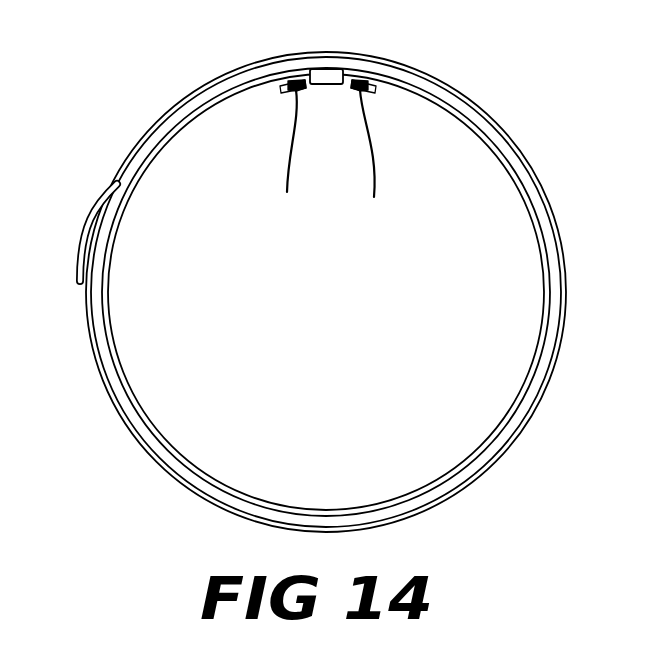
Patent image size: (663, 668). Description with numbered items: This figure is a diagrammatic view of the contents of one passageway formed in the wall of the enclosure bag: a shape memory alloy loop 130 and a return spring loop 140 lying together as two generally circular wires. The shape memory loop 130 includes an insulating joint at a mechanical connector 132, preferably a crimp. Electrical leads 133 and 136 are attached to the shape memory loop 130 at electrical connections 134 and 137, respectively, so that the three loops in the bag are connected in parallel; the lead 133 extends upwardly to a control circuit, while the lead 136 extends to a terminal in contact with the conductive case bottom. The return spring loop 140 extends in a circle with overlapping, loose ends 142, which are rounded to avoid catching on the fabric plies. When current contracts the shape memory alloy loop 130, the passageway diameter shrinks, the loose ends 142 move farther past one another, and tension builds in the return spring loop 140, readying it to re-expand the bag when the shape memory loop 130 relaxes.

The shape memory alloy loop 130 is at (540, 273).
The return spring loop 140 is at (532, 150).
The overlapping loose ends 142 is at (96, 178).
The mechanical connector 132 is at (327, 77).
The electrical connection 134 is at (290, 94).
The electrical connection 137 is at (367, 95).
The electrical lead 133 is at (284, 166).
The electrical lead 136 is at (377, 176).